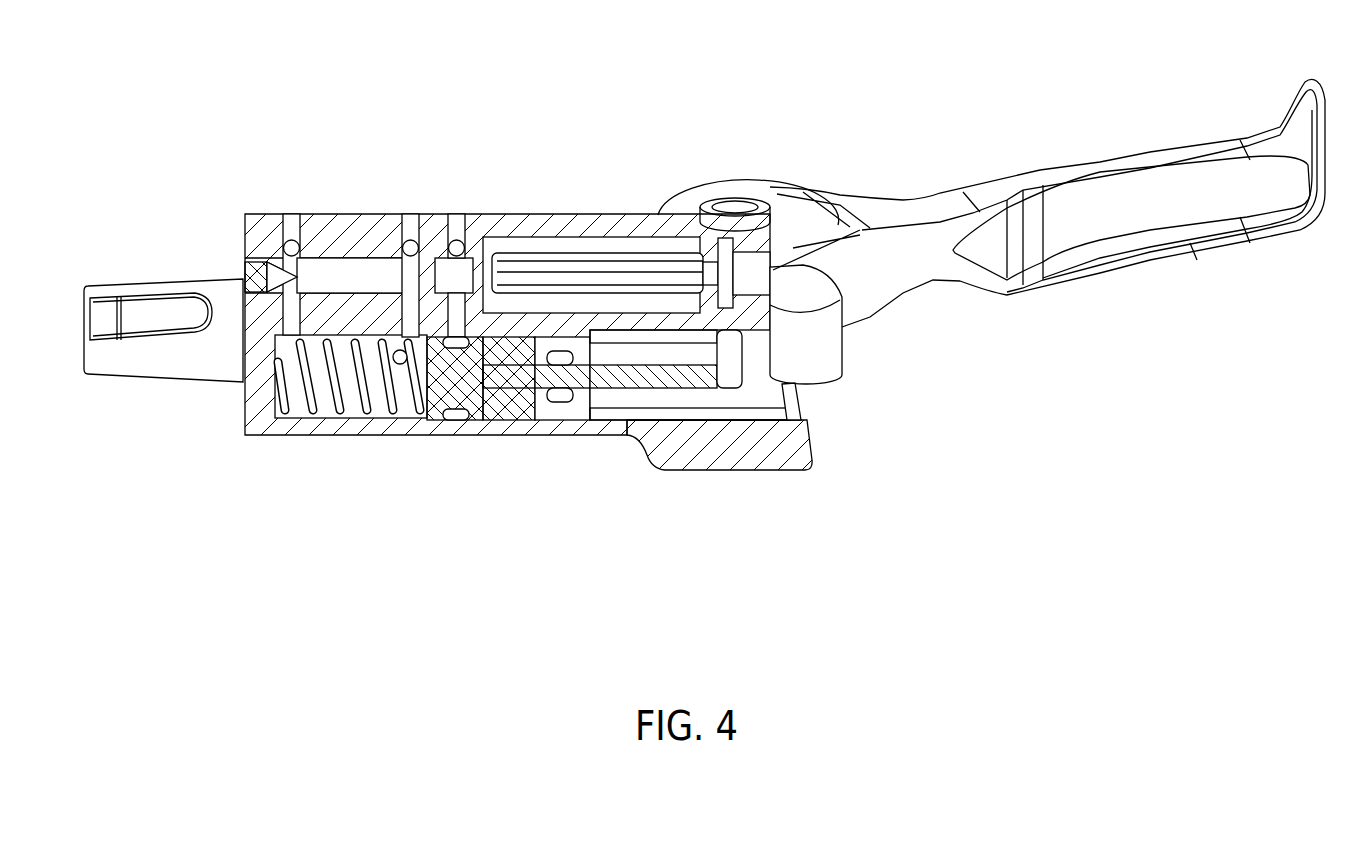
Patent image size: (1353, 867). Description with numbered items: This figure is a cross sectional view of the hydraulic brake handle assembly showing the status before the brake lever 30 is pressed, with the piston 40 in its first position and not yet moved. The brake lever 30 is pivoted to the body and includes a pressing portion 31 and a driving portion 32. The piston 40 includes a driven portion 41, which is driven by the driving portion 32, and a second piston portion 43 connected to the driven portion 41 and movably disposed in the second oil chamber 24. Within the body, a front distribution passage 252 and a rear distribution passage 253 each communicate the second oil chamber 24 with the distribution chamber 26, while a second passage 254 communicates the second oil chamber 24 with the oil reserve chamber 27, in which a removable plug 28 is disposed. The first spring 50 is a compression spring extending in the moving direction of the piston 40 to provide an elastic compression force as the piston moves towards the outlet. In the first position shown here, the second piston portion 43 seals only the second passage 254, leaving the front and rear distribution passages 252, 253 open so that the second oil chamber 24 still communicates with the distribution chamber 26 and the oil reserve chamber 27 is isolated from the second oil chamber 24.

The second oil chamber 24 is at (313, 393).
The distribution chamber 26 is at (357, 253).
The oil reserve chamber 27 is at (583, 250).
The removable plug 28 is at (745, 204).
The brake lever 30 is at (1070, 162).
The pressing portion 31 is at (1178, 158).
The driving portion 32 is at (835, 350).
The piston 40 is at (627, 381).
The driven portion 41 is at (778, 352).
The second piston portion 43 is at (450, 385).
The first spring 50 is at (368, 398).
The front distribution passage 252 is at (277, 247).
The rear distribution passage 253 is at (421, 243).
The second passage 254 is at (483, 387).